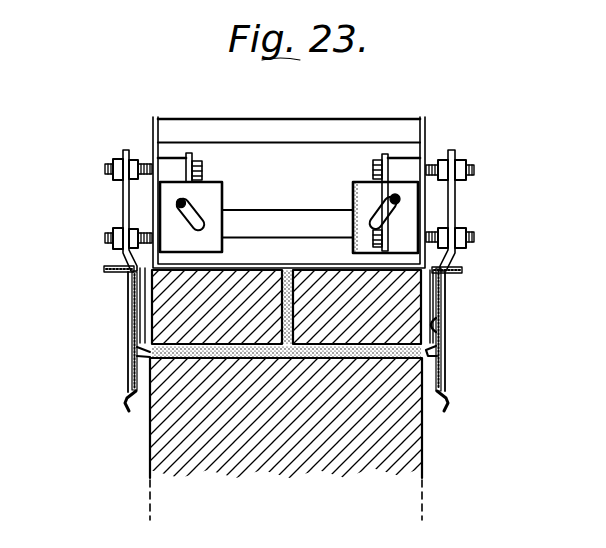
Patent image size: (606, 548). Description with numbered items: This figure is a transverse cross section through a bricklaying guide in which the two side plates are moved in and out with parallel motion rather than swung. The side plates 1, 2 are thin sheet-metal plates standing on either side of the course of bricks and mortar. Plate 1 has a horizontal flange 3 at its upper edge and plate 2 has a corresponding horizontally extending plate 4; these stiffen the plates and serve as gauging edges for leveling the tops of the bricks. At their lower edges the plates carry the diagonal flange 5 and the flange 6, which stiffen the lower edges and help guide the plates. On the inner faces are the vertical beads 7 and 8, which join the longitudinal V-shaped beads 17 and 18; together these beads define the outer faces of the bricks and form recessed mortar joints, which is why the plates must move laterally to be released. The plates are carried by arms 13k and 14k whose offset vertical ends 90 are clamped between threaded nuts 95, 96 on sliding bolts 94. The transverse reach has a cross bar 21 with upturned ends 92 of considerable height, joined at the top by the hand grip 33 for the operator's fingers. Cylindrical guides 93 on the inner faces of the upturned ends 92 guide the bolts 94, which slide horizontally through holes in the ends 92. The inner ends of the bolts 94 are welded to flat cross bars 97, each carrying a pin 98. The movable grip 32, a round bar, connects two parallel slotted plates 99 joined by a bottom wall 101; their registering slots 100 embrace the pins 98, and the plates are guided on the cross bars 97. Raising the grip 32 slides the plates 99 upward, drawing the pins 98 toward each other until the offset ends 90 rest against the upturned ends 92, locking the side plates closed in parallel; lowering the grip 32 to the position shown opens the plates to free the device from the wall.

The side plate 1 is at (128, 345).
The side plate 2 is at (441, 328).
The horizontal flange 3 is at (108, 265).
The horizontally extending plate 4 is at (458, 266).
The flange 5 is at (123, 410).
The flange 6 is at (448, 407).
The vertical bead 7 is at (140, 306).
The vertical bead 8 is at (441, 314).
The arm 13k is at (128, 327).
The arm 14k is at (445, 289).
The longitudinal V-shaped bead 17 is at (128, 359).
The longitudinal V-shaped bead 18 is at (441, 352).
The cross bar 21 is at (260, 264).
The grip 32 is at (266, 215).
The hand grip 33 is at (294, 122).
The offset portion 90 is at (124, 198).
The upturned end 92 is at (153, 117).
The cylindrical guide 93 is at (393, 158).
The sliding bolt 94 is at (145, 163).
The threaded nut 95 is at (114, 158).
The threaded nut 96 is at (114, 180).
The cross bar 97 is at (186, 166).
The pin 98 is at (184, 199).
The slotted plate 99 is at (214, 207).
The slot 100 is at (178, 205).
The bottom wall 101 is at (352, 184).